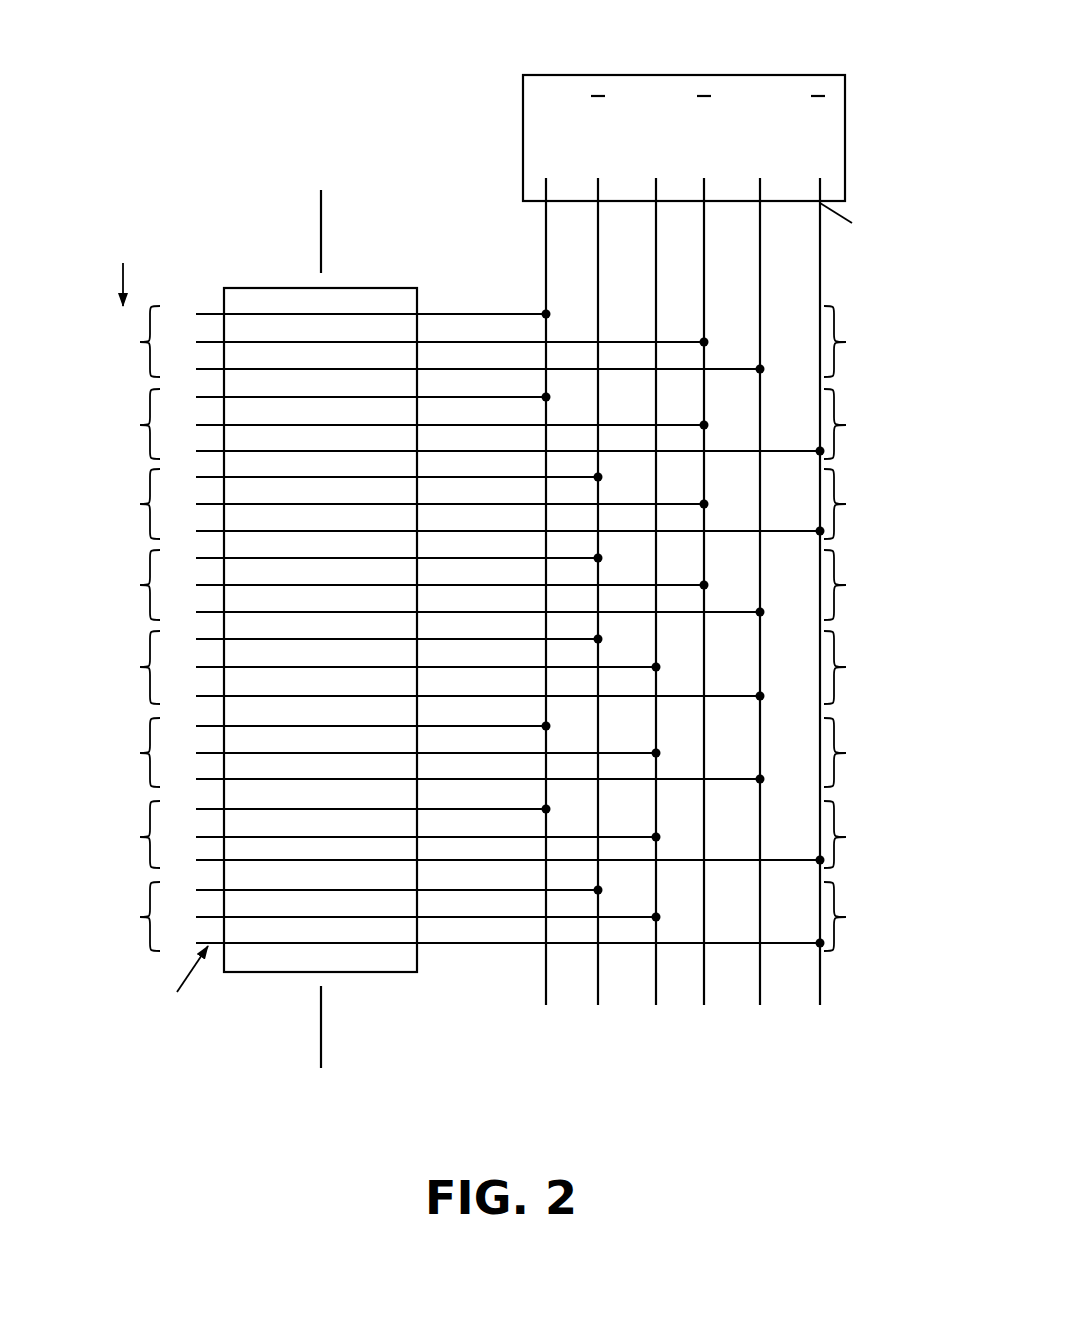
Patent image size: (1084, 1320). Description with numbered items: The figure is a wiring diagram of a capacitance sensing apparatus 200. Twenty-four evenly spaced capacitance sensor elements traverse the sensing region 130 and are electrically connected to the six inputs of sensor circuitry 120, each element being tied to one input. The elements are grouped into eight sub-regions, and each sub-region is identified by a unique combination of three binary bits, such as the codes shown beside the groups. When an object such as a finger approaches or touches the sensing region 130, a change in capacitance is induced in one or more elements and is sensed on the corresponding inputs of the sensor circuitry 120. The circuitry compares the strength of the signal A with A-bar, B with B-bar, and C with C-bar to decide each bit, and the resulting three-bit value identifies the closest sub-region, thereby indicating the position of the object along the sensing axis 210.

The capacitance sensing apparatus 200 is at (285, 70).
The sensor circuitry 120 is at (765, 72).
The sensing region 130 is at (357, 286).
The sensing axis 210 is at (282, 1093).